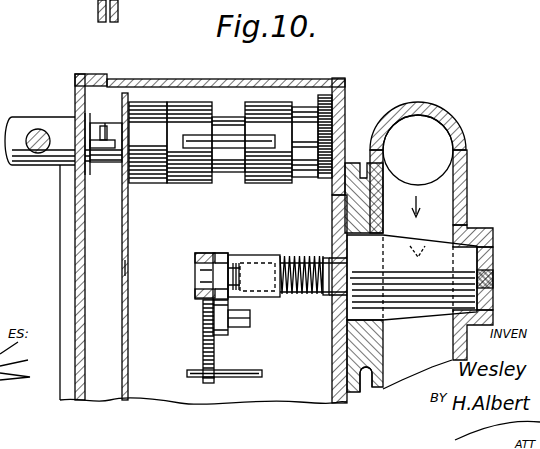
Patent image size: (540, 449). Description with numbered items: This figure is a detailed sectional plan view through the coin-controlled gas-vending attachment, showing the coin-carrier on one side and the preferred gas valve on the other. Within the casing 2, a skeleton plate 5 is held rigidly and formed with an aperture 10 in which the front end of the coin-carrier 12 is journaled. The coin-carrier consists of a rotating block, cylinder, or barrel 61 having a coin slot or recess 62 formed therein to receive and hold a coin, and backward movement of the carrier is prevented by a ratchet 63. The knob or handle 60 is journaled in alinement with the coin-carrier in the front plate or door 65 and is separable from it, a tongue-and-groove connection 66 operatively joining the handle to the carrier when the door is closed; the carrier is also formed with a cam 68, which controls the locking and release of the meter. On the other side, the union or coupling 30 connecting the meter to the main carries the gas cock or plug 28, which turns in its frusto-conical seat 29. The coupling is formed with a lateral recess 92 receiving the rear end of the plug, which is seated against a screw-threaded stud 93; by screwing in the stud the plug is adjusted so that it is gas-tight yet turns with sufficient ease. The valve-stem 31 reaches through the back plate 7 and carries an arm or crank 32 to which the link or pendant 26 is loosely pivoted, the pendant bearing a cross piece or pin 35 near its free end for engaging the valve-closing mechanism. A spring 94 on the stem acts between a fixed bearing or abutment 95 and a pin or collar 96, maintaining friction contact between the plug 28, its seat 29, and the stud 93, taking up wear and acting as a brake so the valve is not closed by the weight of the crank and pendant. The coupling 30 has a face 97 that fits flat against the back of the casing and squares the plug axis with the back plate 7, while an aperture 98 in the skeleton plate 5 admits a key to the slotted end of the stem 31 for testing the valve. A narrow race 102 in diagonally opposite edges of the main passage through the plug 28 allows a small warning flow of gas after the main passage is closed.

The casing 2 is at (212, 80).
The skeleton plate 5 is at (155, 240).
The back plate 7 is at (339, 80).
The aperture 10 is at (120, 122).
The coin-carrier 12 is at (148, 142).
The link or pendant 26 is at (202, 355).
The gas cock or valve plug 28 is at (394, 279).
The seat 29 is at (470, 223).
The union or coupling 30 is at (468, 150).
The valve-stem 31 is at (328, 268).
The arm or crank 32 is at (212, 308).
The cross piece or pin 35 is at (251, 372).
The knob or handle 60 is at (47, 137).
The rotating block, cylinder, or barrel 61 is at (189, 142).
The coin slot or recess 62 is at (246, 141).
The ratchet 63 is at (333, 101).
The front plate or door 65 is at (72, 216).
The tongue-and-groove connection 66 is at (104, 164).
The cam 68 is at (304, 103).
The lateral recess 92 is at (494, 243).
The stud 93 is at (494, 279).
The spring 94 is at (303, 294).
The fixed bearing or abutment 95 is at (281, 256).
The pin or collar 96 is at (330, 300).
The face 97 is at (360, 394).
The aperture 98 is at (129, 268).
The narrow race 102 is at (409, 327).